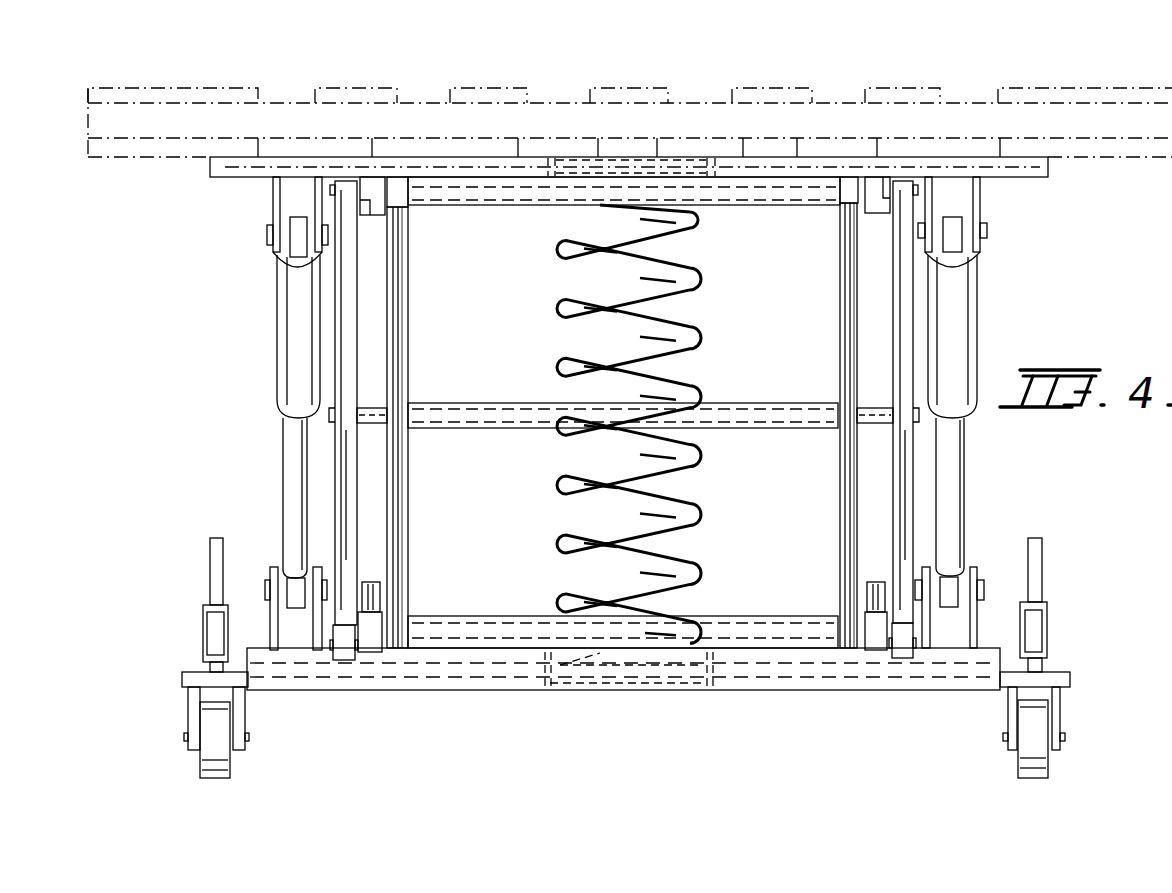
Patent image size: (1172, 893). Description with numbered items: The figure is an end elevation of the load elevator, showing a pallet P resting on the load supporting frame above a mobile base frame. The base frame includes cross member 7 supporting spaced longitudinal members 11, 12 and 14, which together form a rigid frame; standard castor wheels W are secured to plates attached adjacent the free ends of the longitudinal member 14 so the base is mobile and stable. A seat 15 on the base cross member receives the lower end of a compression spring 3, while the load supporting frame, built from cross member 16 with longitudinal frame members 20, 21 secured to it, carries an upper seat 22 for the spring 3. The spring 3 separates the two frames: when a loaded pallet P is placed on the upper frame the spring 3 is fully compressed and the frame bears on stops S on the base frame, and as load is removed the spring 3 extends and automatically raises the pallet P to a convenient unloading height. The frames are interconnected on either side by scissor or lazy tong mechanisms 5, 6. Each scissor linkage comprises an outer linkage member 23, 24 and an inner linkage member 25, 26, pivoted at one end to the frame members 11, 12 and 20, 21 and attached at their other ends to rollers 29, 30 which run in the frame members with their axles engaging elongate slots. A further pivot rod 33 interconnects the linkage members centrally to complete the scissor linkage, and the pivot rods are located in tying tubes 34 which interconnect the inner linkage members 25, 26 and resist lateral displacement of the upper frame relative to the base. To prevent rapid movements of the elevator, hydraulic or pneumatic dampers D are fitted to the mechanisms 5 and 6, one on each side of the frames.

The pallet P is at (173, 158).
The roller 30 is at (323, 188).
The longitudinal frame member 21 is at (373, 205).
The longitudinal frame member 20 is at (880, 198).
The seat 22 is at (598, 163).
The cross member 16 is at (753, 165).
The damper D is at (297, 307).
The scissor mechanism 6 is at (342, 418).
The scissor mechanism 5 is at (894, 412).
The compression spring 3 is at (695, 382).
The tying tube 34 is at (443, 402).
The pivot rod 33 is at (623, 388).
The outer linkage member 24 is at (348, 465).
The inner linkage member 26 is at (398, 470).
The inner linkage member 25 is at (848, 462).
The outer linkage member 23 is at (908, 468).
The stop S is at (366, 582).
The roller 29 is at (487, 628).
The longitudinal member 14 is at (215, 637).
The castor wheel W is at (217, 767).
The longitudinal member 11 is at (365, 640).
The longitudinal member 12 is at (873, 640).
The cross member 7 is at (490, 677).
The seat 15 is at (643, 687).